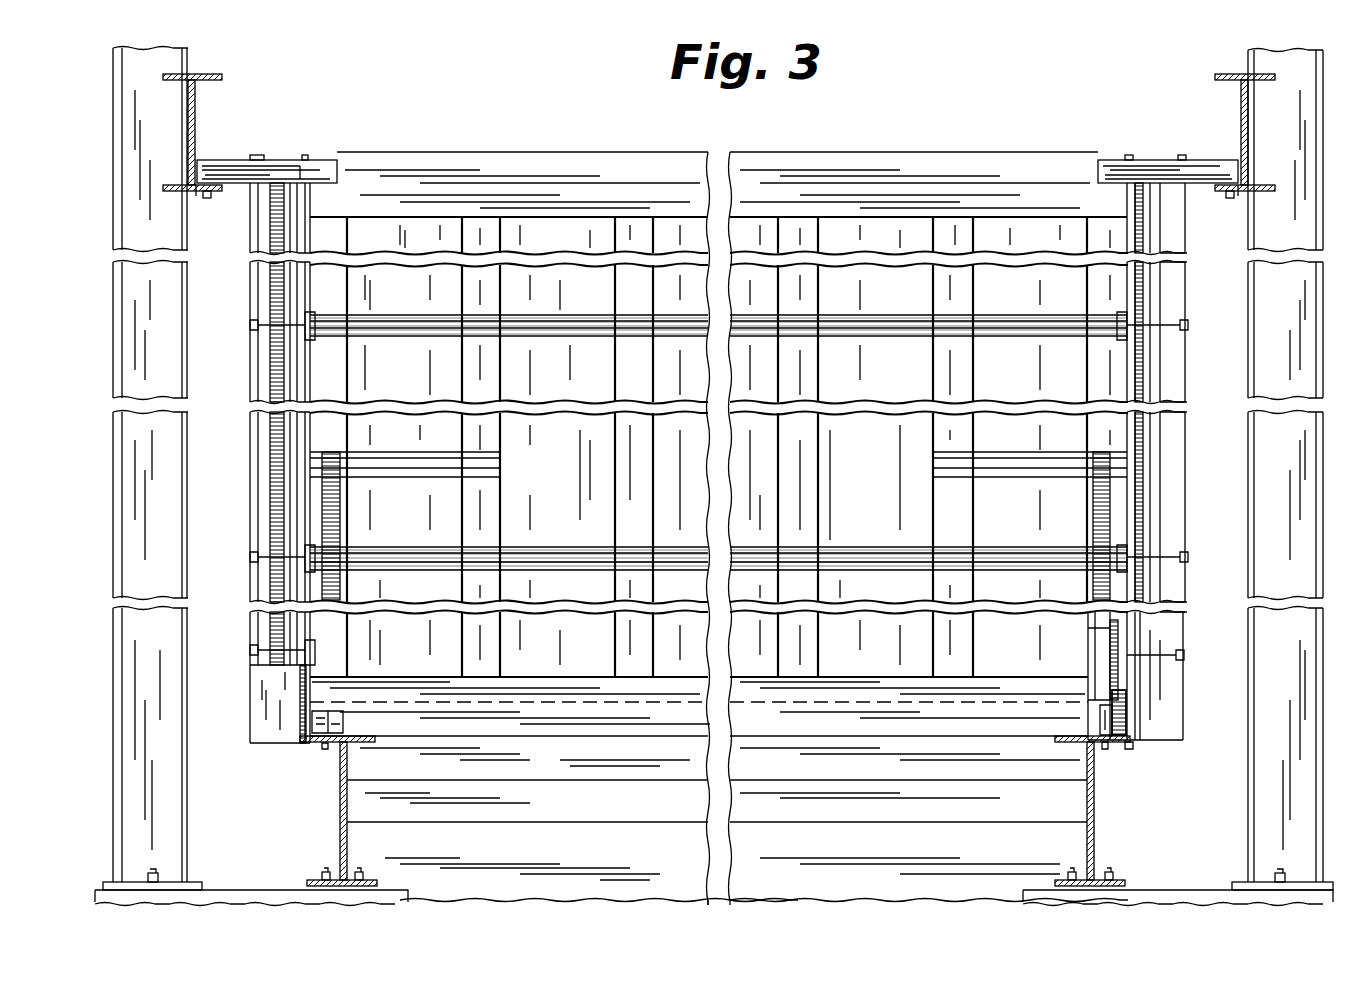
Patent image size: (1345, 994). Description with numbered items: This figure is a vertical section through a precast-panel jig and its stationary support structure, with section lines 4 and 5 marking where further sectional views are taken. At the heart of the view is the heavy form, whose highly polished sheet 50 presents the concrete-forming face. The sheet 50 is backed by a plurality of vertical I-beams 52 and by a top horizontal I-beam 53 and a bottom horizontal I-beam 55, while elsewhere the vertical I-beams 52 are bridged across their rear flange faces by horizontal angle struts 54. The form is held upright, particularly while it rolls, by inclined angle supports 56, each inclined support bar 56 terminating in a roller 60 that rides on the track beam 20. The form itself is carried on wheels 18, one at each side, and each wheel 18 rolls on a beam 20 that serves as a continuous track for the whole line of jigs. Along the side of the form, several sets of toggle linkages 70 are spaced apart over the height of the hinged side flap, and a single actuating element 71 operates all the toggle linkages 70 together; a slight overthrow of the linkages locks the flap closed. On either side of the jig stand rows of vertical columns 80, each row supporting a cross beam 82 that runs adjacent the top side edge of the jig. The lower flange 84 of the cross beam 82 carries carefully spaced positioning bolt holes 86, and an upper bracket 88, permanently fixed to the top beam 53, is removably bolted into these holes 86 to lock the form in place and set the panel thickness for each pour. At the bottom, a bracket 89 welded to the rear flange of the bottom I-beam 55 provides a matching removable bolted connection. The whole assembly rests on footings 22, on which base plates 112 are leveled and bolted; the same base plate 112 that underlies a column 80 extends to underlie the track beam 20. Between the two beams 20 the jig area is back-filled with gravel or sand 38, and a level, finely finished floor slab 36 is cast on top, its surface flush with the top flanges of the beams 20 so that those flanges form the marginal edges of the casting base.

The section line 4- 4 is at (175, 295).
The section line 5- 5 is at (290, 653).
The wheels 18 is at (300, 705).
The beam 20 is at (340, 790).
The footings 22 is at (289, 904).
The floor slab 36 is at (542, 769).
The gravel or sand 38 is at (612, 811).
The highly polished sheet 50 is at (580, 466).
The vertical I-beams 52 is at (465, 358).
The horizontal I-beam (top beam) 53 is at (553, 228).
The horizontal struts 54 is at (533, 335).
The horizontal I-beam (bottom) 55 is at (576, 670).
The inclined supports 56 is at (340, 510).
The roller 60 is at (1135, 738).
The toggle linkage 70 is at (255, 326).
The actuating element 71 is at (285, 364).
The vertical columns 80 is at (113, 442).
The cross beam 82 is at (196, 102).
The lower flange 84 is at (179, 184).
The positioning bolt holes 86 is at (198, 190).
The upper bracket 88 is at (232, 162).
The bracket 89 is at (300, 736).
The base plates 112 is at (240, 862).